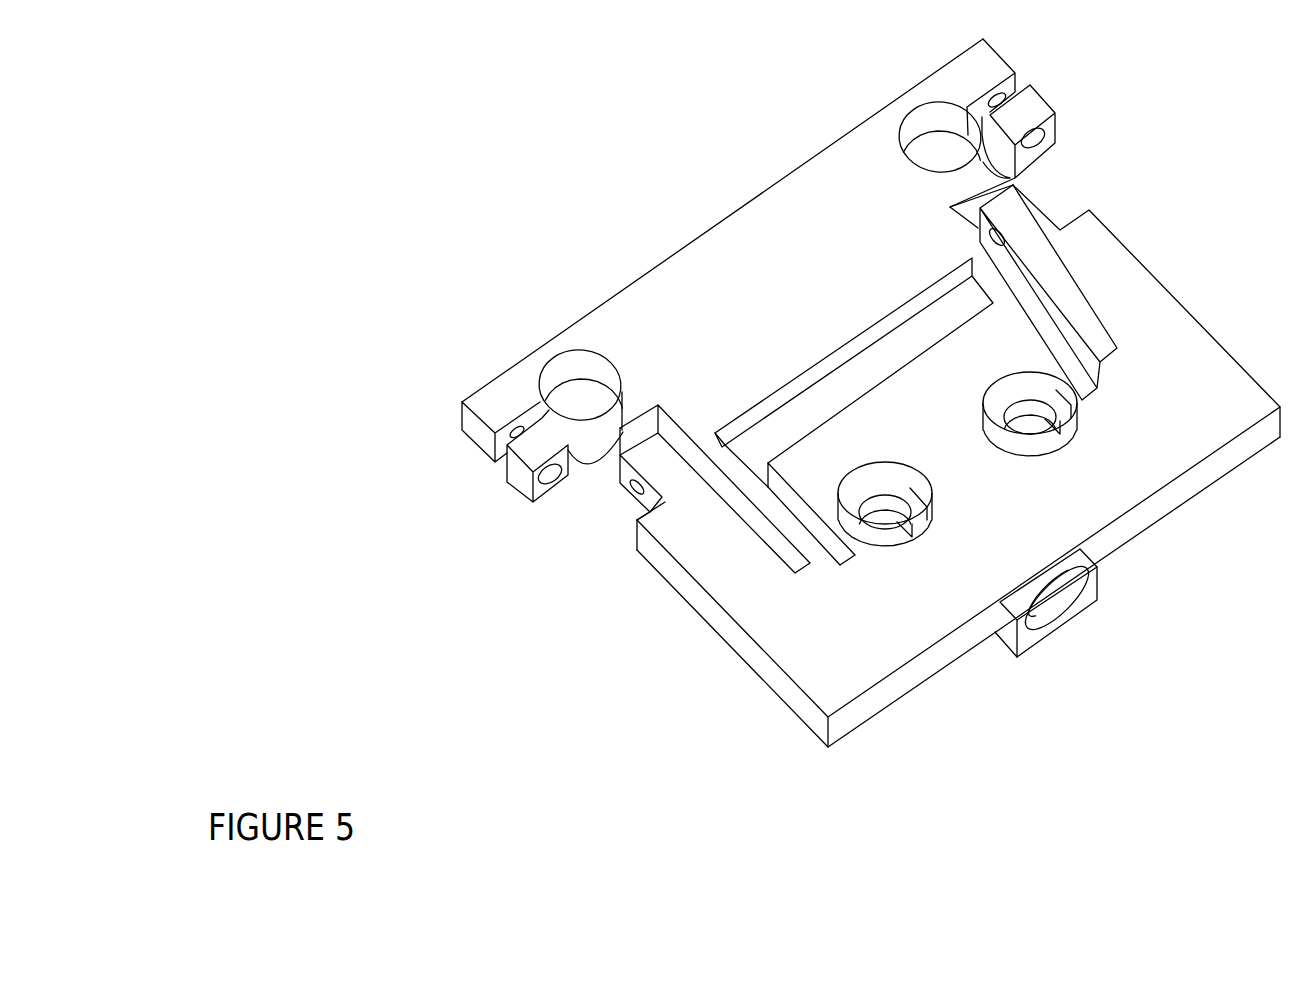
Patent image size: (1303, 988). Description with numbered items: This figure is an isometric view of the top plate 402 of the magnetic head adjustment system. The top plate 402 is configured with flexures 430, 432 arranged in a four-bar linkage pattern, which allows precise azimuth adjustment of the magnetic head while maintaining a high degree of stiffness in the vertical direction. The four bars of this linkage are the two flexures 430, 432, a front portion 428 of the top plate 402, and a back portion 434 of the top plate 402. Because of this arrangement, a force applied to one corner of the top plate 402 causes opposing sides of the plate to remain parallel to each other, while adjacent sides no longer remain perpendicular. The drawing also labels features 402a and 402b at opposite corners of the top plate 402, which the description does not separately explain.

The top plate 402 is at (1205, 421).
The first rod clamp 402a is at (912, 122).
The second rod clamp 402b is at (570, 365).
The front portion 428 is at (738, 228).
The flexure 430 is at (735, 470).
The flexure 432 is at (1008, 297).
The back portion 434 is at (1010, 520).